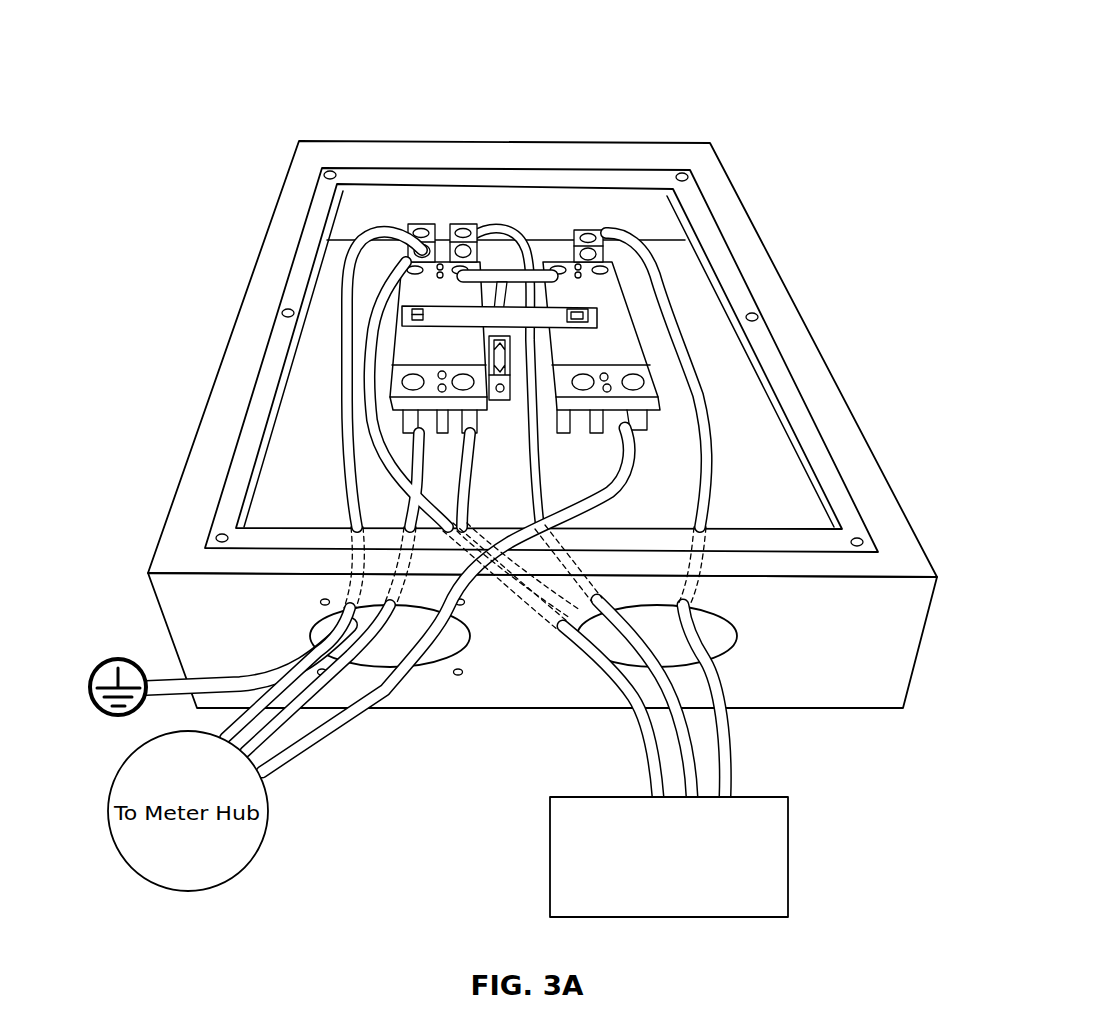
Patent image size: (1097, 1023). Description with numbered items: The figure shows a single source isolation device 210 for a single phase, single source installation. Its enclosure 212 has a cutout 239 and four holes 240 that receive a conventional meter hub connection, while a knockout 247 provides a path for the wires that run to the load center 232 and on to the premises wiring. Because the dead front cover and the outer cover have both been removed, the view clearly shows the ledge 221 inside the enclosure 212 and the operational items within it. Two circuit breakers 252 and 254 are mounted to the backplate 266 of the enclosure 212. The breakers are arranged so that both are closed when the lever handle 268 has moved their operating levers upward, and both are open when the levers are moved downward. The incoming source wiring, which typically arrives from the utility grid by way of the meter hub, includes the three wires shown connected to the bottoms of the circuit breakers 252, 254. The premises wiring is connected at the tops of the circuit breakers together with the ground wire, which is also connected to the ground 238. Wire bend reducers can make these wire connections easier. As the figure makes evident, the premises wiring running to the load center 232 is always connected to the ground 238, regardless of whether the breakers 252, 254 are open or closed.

The single source isolation device 210 is at (771, 60).
The enclosure 212 is at (194, 618).
The ledge 221 is at (652, 176).
The backplate 266 is at (277, 503).
The circuit breaker 252 is at (405, 357).
The circuit breaker 254 is at (648, 406).
The lever handle 268 is at (490, 274).
The ground 238 is at (92, 684).
The cutout 239 is at (435, 666).
The holes 240 is at (462, 674).
The knockout 247 is at (735, 655).
The load center 232 is at (669, 857).